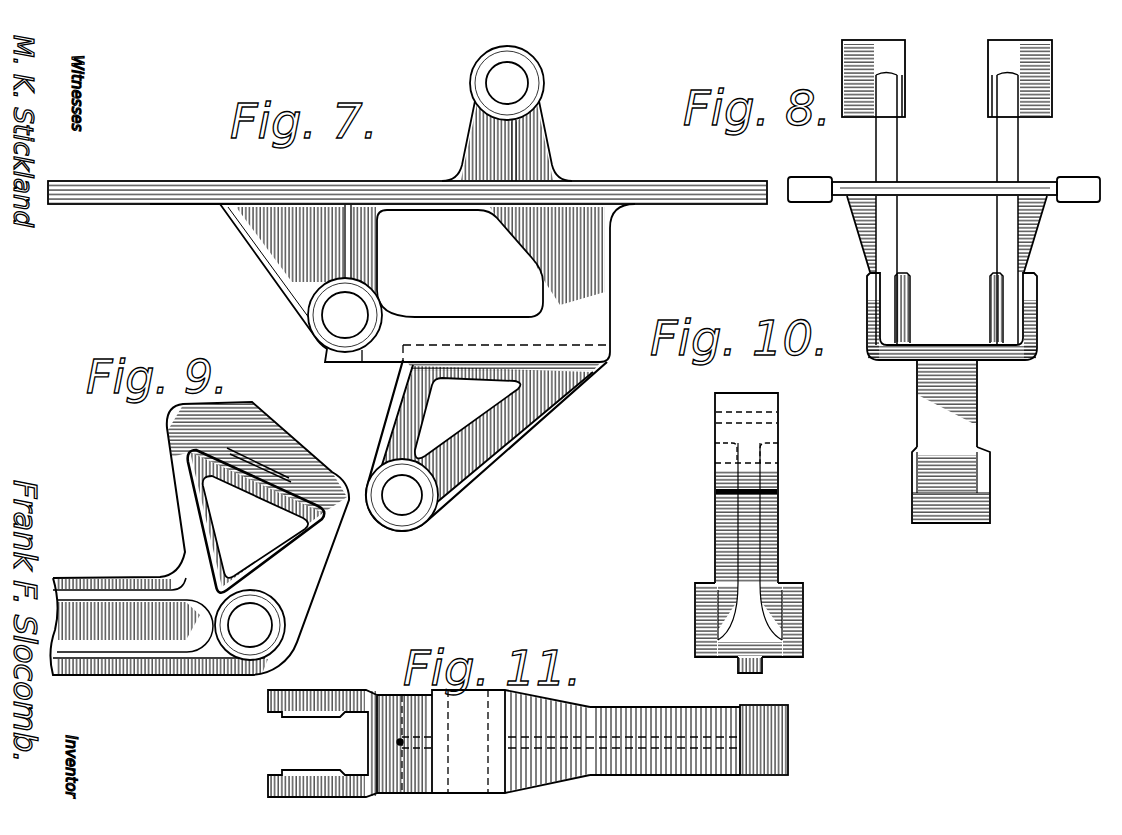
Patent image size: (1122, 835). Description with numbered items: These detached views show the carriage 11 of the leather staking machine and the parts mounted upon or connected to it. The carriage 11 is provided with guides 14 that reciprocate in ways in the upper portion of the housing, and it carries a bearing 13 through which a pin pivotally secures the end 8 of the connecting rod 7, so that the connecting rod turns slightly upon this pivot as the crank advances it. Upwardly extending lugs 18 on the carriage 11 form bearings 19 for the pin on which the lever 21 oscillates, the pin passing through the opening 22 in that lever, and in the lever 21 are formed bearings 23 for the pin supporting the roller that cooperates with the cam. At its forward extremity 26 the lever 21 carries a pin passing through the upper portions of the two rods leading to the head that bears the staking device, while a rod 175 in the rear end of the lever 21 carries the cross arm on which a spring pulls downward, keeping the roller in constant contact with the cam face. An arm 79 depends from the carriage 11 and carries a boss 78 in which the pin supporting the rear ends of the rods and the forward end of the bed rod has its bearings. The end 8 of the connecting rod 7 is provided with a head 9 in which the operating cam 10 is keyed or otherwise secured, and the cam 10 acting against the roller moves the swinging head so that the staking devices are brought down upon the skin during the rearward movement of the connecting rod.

In FIG. 9, the connecting rod 7 is at (133, 640).
In FIG. 9, the end of connecting rod 8 is at (293, 633).
In FIG. 10, the end of connecting rod 8 is at (759, 669).
In FIG. 9, the head 9 is at (262, 521).
In FIG. 10, the head 9 is at (749, 589).
In FIG. 9, the cam 10 is at (241, 426).
In FIG. 10, the cam 10 is at (740, 400).
In FIG. 7, the carriage 11 is at (407, 178).
In FIG. 8, the carriage 11 is at (944, 173).
In FIG. 7, the bearing 13 is at (372, 308).
In FIG. 8, the bearing 13 is at (1043, 310).
In FIG. 7, the guides 14 is at (193, 198).
In FIG. 8, the guides 14 is at (1066, 212).
In FIG. 7, the lugs 18 is at (552, 127).
In FIG. 8, the lugs 18 is at (1018, 148).
In FIG. 7, the bearings 19 is at (540, 78).
In FIG. 8, the bearings 19 is at (1056, 63).
In FIG. 11, the lever 21 is at (624, 729).
In FIG. 11, the opening 22 is at (475, 717).
In FIG. 11, the bearings 23 is at (330, 805).
In FIG. 11, the forward extremity 26 is at (788, 745).
In FIG. 7, the boss 78 is at (417, 511).
In FIG. 8, the boss 78 is at (936, 485).
In FIG. 7, the arm 79 is at (486, 445).
In FIG. 8, the arm 79 is at (933, 426).
In FIG. 11, the rod 175 is at (403, 746).